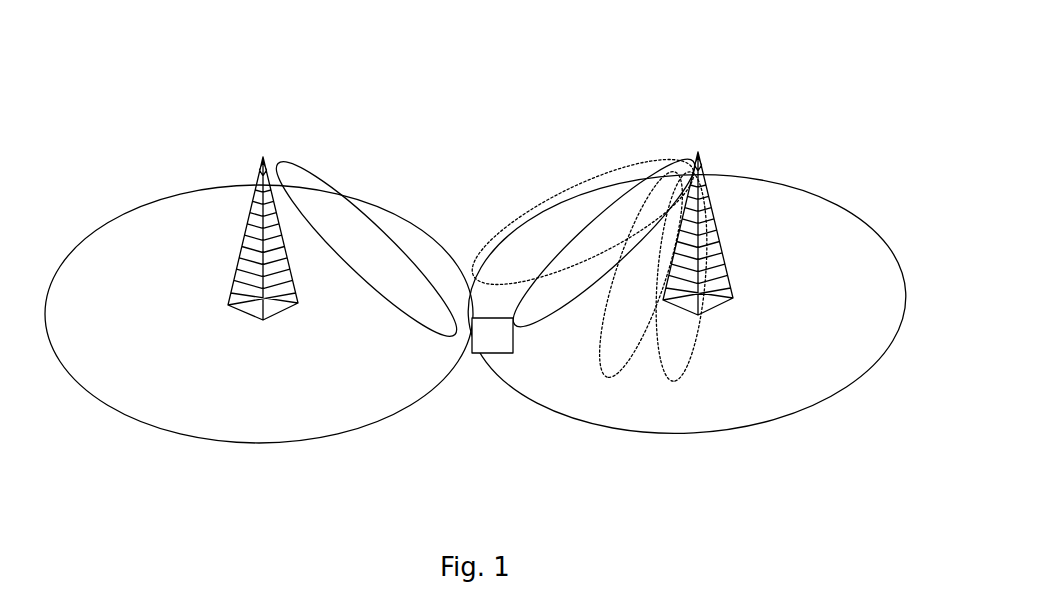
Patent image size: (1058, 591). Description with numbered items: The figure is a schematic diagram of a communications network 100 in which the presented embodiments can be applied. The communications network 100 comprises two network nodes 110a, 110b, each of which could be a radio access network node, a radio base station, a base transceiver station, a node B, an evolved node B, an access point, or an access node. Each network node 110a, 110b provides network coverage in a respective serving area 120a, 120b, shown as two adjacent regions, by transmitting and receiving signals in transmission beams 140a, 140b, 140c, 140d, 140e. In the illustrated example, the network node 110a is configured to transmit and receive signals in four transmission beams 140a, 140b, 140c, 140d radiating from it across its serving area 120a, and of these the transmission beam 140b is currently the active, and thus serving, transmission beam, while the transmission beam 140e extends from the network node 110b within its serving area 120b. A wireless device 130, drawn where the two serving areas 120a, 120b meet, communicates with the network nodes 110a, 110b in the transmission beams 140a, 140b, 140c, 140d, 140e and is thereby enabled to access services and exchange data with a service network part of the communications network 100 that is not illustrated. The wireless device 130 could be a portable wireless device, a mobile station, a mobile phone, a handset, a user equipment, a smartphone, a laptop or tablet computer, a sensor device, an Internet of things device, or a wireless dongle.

The communications network 100 is at (750, 60).
The network node 110a is at (705, 168).
The network node 110b is at (257, 177).
The serving area 120a is at (797, 417).
The serving area 120b is at (195, 437).
The wireless device 130 is at (472, 342).
The transmission beam 140a is at (617, 173).
The transmission beam 140b is at (555, 330).
The transmission beam 140c is at (610, 380).
The transmission beam 140d is at (678, 383).
The transmission beam 140e is at (327, 190).